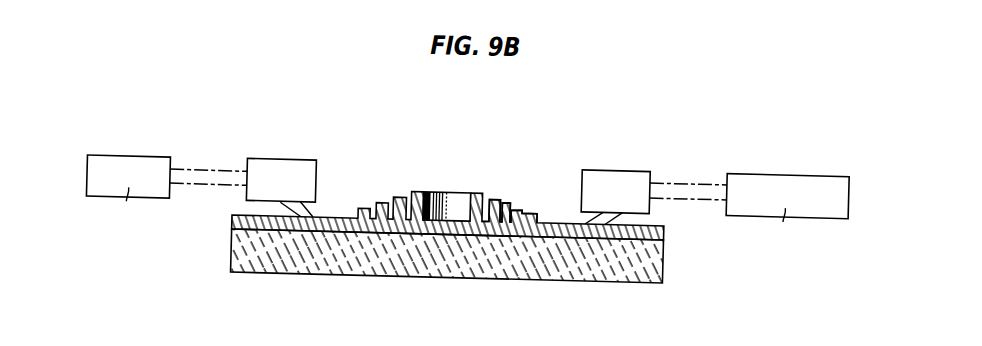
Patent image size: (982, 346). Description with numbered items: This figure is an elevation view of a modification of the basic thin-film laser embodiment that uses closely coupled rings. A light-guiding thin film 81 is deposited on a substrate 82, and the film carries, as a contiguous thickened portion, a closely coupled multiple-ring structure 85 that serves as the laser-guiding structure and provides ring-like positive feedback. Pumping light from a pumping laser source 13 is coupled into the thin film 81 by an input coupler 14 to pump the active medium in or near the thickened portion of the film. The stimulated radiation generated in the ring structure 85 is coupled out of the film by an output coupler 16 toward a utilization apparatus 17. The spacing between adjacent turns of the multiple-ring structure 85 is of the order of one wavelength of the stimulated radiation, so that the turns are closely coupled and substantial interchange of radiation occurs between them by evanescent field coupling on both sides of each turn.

The pumping laser source 13 is at (115, 161).
The input coupler 14 is at (268, 164).
The output coupler 16 is at (597, 162).
The utilization apparatus 17 is at (777, 160).
The light-guiding thin film 81 is at (333, 214).
The substrate 82 is at (438, 272).
The closely coupled multiple-ring structure 85 is at (526, 200).